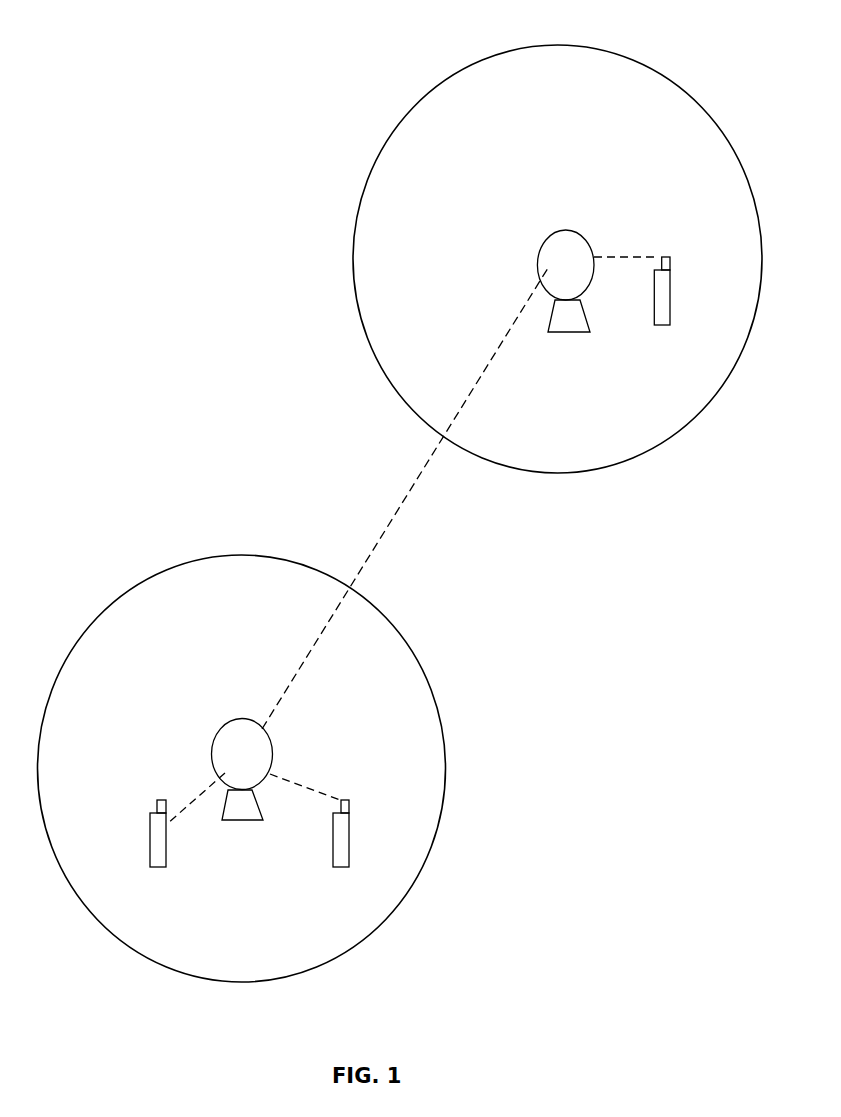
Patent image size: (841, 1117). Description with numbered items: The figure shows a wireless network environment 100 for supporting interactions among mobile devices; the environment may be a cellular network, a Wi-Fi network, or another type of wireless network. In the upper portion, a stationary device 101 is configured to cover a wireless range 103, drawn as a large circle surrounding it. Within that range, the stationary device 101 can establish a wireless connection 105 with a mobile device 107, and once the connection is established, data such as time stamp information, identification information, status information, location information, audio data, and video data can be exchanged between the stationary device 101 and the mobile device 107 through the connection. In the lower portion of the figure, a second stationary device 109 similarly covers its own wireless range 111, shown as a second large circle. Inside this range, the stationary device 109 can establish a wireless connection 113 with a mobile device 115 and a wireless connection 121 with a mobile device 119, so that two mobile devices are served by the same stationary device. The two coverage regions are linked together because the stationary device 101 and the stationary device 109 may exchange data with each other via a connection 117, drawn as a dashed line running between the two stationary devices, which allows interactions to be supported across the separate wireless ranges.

The wireless network environment 100 is at (121, 72).
The stationary device 101 is at (563, 255).
The wireless range 103 is at (415, 140).
The wireless connection 105 is at (624, 239).
The mobile device 107 is at (670, 310).
The stationary device 109 is at (233, 732).
The wireless range 111 is at (145, 607).
The wireless connection 113 is at (190, 792).
The mobile device 115 is at (150, 841).
The connection 117 is at (405, 498).
The mobile device 119 is at (349, 841).
The wireless connection 121 is at (305, 775).